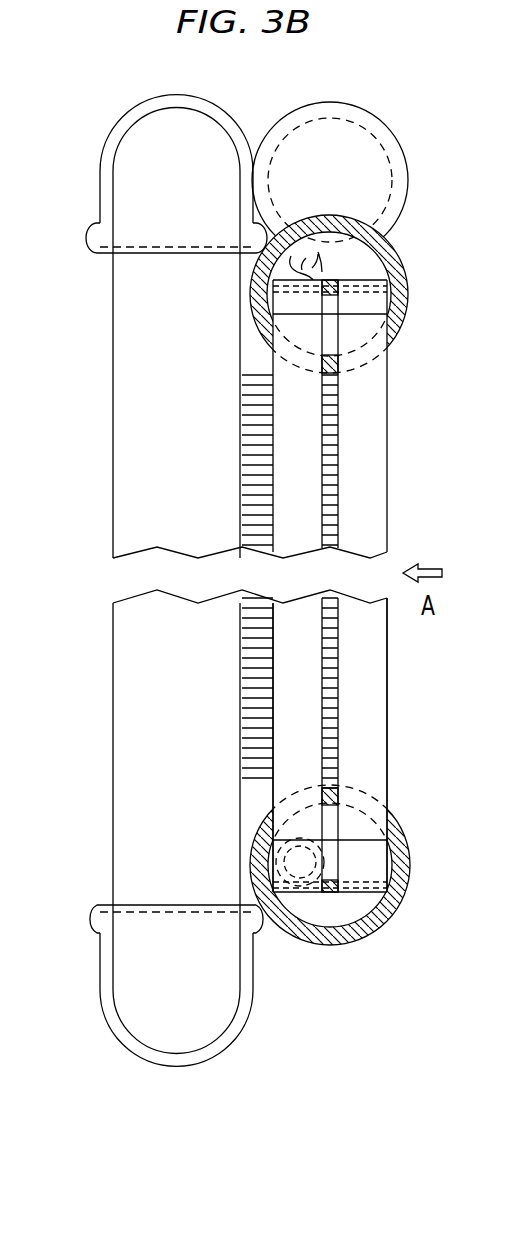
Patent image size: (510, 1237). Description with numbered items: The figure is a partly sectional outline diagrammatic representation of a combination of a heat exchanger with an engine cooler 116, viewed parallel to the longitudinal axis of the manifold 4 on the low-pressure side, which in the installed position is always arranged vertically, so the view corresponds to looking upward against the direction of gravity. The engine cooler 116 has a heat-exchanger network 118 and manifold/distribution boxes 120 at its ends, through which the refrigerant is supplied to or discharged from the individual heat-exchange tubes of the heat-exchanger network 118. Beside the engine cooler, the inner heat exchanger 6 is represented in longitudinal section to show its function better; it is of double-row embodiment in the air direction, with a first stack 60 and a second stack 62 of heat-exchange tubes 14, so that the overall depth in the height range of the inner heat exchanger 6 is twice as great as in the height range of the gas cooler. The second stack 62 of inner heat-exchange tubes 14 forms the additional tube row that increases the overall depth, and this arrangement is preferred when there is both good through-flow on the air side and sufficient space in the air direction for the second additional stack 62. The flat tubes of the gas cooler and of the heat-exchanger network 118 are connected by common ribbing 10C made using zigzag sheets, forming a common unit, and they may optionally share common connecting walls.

The manifold on the low-pressure side 4 is at (322, 195).
The inner heat exchanger 6 is at (348, 531).
The common ribbing 10C is at (250, 665).
The second heat-exchange tubes 14 is at (286, 749).
The first stack 60 is at (286, 651).
The second stack 62 is at (350, 651).
The engine cooler 116 is at (212, 581).
The heat-exchanger network 118 is at (161, 487).
The manifold/distribution boxes 120 is at (160, 185).